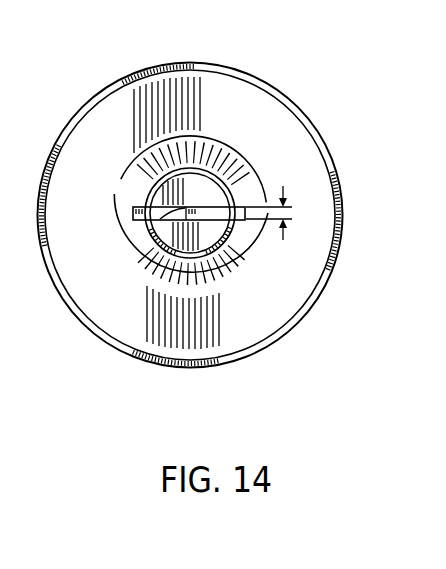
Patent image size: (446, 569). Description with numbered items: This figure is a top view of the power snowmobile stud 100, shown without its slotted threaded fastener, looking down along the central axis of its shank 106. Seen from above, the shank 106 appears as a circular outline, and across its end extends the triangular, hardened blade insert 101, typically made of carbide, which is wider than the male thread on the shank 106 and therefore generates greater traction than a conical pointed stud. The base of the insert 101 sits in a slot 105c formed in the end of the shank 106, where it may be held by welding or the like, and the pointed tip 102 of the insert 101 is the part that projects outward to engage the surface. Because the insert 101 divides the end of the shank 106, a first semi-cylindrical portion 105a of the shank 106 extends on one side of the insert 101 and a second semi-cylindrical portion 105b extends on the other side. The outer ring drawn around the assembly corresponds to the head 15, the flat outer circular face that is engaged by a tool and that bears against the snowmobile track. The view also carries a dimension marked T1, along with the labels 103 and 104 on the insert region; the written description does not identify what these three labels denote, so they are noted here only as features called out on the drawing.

The head 15 is at (232, 333).
The snowmobile stud 100 is at (259, 101).
The blade insert 101 is at (240, 203).
The pointed tip 102 is at (150, 242).
The bar / vane element 103 is at (133, 216).
The thickness dimension 104 is at (258, 200).
The first semi-cylindrical portion 105a is at (230, 266).
The second semi-cylindrical portion 105b is at (193, 166).
The slot 105c is at (192, 189).
The shank 106 is at (186, 114).
The thickness T1 is at (283, 240).